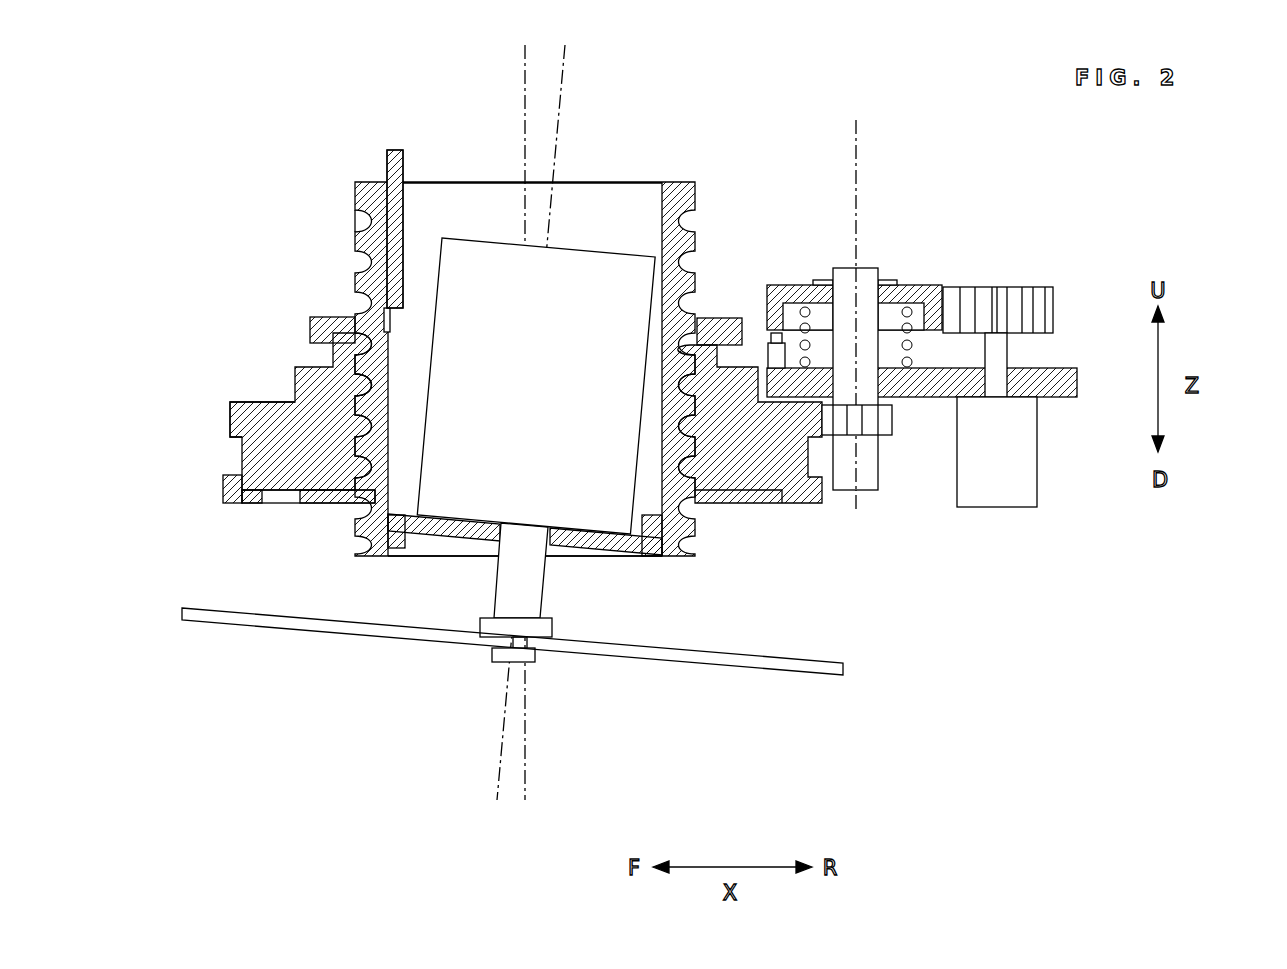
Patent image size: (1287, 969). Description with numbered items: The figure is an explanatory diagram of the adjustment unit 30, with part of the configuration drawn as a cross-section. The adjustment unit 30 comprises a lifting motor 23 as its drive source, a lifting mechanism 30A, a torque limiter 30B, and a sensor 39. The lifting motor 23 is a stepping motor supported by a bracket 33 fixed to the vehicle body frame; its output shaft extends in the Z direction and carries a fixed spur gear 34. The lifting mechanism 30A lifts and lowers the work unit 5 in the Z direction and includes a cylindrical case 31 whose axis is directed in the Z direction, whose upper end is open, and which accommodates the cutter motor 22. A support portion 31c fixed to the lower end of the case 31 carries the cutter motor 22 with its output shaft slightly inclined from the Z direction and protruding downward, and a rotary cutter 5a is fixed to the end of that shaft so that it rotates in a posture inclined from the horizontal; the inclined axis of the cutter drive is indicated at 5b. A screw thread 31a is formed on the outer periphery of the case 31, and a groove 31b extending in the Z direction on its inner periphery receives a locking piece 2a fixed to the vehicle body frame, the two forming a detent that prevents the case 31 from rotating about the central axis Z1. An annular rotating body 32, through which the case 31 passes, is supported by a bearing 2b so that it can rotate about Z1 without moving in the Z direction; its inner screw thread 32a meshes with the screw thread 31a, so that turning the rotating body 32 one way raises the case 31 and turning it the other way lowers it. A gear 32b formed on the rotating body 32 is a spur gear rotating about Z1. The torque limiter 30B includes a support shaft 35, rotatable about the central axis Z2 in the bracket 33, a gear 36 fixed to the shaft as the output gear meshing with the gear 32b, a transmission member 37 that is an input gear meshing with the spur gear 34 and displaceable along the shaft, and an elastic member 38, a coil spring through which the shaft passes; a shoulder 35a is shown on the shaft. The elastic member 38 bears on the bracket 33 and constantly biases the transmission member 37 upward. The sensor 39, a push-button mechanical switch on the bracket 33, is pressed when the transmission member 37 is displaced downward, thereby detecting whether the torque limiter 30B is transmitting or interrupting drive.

The locking piece 2a is at (386, 152).
The bearing 2b is at (310, 330).
The work unit 5 is at (410, 677).
The rotary cutter 5a is at (772, 675).
The tilted axis 5b is at (500, 788).
The cutter motor 22 is at (600, 247).
The lifting motor 23 is at (995, 508).
The adjustment unit 30 is at (303, 143).
The lifting mechanism 30A is at (722, 155).
The torque limiter 30B is at (908, 233).
The case 31 is at (612, 178).
The screw thread 31a is at (356, 240).
The groove 31b is at (392, 318).
The support portion 31c is at (647, 560).
The annular rotating body 32 is at (300, 495).
The screw thread 32a is at (395, 405).
The gear 32b is at (233, 410).
The bracket 33 is at (915, 398).
The spur gear 34 is at (1035, 285).
The support shaft 35 is at (870, 266).
The shaft flange 35a is at (818, 280).
The gear 36 is at (880, 437).
The transmission member 37 is at (768, 283).
The elastic member 38 is at (905, 305).
The sensor 39 is at (767, 345).
The central axis Z1 is at (522, 80).
The central axis Z2 is at (852, 164).